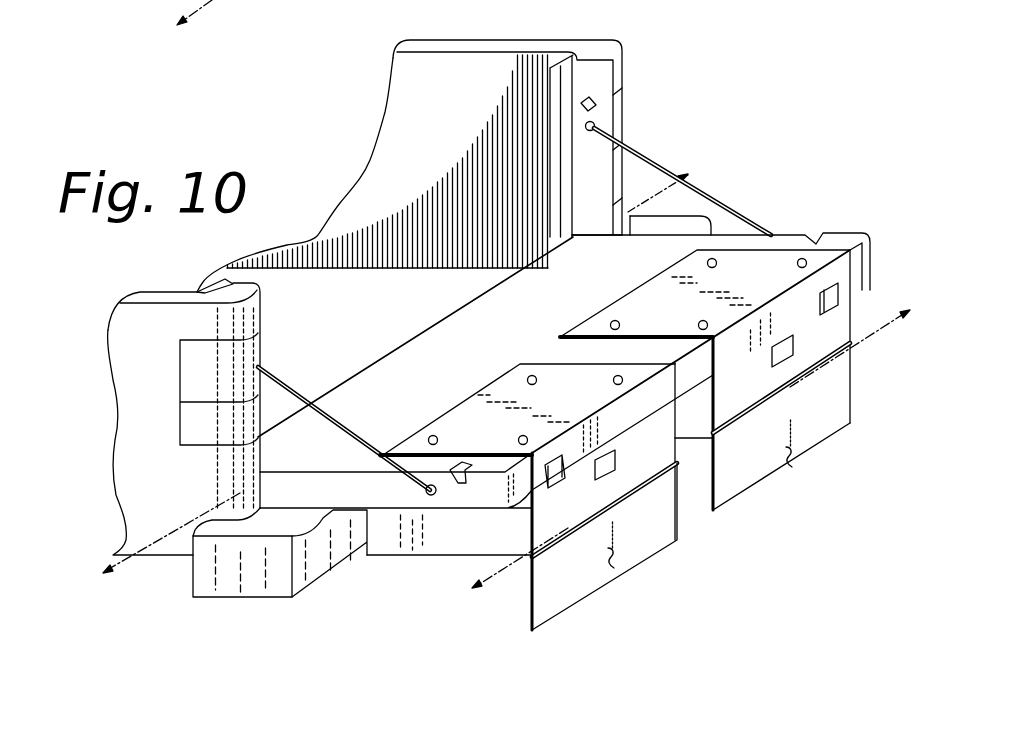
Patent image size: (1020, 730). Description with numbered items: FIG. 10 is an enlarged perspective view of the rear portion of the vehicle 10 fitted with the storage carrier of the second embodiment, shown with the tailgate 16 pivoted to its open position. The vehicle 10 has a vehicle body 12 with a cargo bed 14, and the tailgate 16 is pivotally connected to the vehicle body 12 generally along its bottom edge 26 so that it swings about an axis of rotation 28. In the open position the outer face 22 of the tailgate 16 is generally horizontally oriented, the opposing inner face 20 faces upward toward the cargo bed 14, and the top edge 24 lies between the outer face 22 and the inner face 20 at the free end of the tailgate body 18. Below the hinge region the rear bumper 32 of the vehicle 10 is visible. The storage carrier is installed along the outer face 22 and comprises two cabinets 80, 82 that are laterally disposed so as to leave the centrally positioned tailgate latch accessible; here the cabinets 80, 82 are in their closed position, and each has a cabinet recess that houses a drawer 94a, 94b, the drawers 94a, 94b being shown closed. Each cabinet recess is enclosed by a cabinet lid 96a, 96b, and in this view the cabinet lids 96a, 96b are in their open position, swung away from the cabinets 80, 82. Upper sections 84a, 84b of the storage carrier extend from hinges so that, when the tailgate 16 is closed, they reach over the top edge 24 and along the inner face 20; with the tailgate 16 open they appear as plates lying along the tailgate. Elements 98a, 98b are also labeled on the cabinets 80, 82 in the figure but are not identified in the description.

The vehicle 10 is at (429, 43).
The vehicle body 12 is at (505, 46).
The cargo bed 14 is at (348, 95).
The tailgate 16 is at (637, 253).
The tailgate body 18 is at (667, 253).
The inner face 20 is at (690, 240).
The outer face 22 is at (454, 522).
The top edge 24 is at (690, 372).
The bottom edge 26 is at (392, 343).
The axis of rotation 28 is at (167, 537).
The rear bumper 32 is at (215, 575).
The cabinet 80 is at (393, 540).
The cabinet 82 is at (695, 415).
The upper section 84a is at (596, 394).
The upper section 84b is at (778, 282).
The drawer 94a is at (582, 490).
The drawer 94b is at (766, 376).
The cabinet lid 96a is at (547, 512).
The cabinet lid 96b is at (730, 395).
The first hook 98a is at (635, 548).
The second hook 98b is at (818, 433).